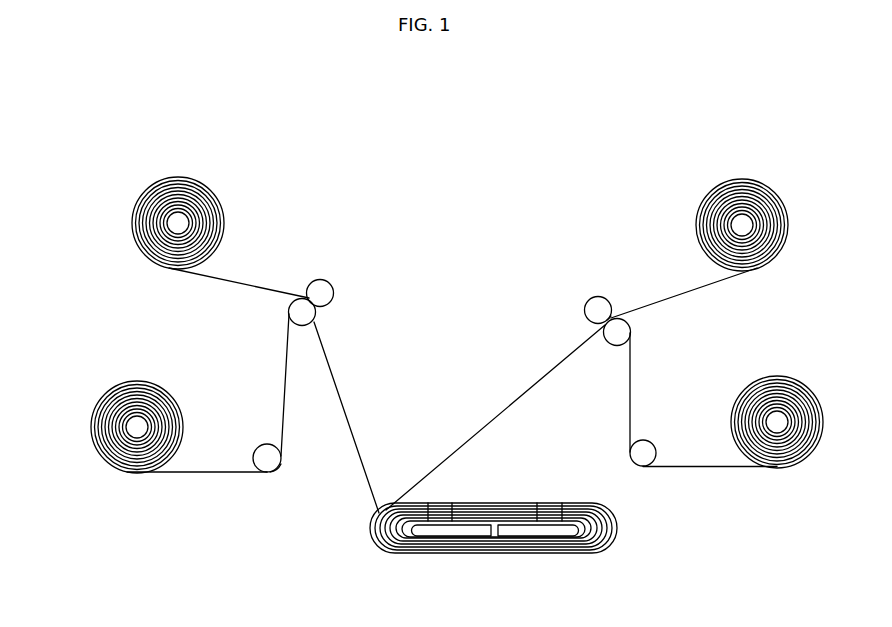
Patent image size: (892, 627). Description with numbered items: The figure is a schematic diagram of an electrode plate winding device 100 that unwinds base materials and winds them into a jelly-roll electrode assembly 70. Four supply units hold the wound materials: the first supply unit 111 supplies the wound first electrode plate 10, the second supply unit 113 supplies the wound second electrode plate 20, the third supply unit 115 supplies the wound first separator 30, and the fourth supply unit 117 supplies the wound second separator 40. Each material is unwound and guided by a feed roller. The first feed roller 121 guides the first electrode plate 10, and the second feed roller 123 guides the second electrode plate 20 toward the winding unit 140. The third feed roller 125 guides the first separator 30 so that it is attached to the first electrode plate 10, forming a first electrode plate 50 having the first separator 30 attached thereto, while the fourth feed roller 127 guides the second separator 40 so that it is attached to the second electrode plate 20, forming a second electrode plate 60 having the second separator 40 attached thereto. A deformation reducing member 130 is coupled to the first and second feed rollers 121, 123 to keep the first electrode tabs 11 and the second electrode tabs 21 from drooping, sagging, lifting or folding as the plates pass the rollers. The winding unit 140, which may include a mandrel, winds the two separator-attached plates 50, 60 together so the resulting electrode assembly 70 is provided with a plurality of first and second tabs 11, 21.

The electrode plate winding device 100 is at (80, 128).
The first supply unit 111 is at (105, 395).
The second supply unit 113 is at (720, 187).
The third supply unit 115 is at (197, 180).
The fourth supply unit 117 is at (792, 466).
The first electrode plate 10 is at (200, 470).
The second electrode plate 20 is at (672, 292).
The first separator 30 is at (236, 277).
The second separator 40 is at (708, 468).
The first electrode plate having the first separator attached thereto 50 is at (349, 408).
The second electrode plate having the second separator attached thereto 60 is at (495, 412).
The electrode assembly 70 is at (355, 556).
The first feed roller 121 is at (262, 452).
The second feed roller 123 is at (603, 330).
The third feed roller 125 is at (314, 318).
The fourth feed roller 127 is at (645, 448).
The deformation reducing member 130 is at (278, 473).
The first electrode tabs 11 is at (445, 500).
The second electrode tabs 21 is at (542, 502).
The winding unit 140 is at (527, 534).